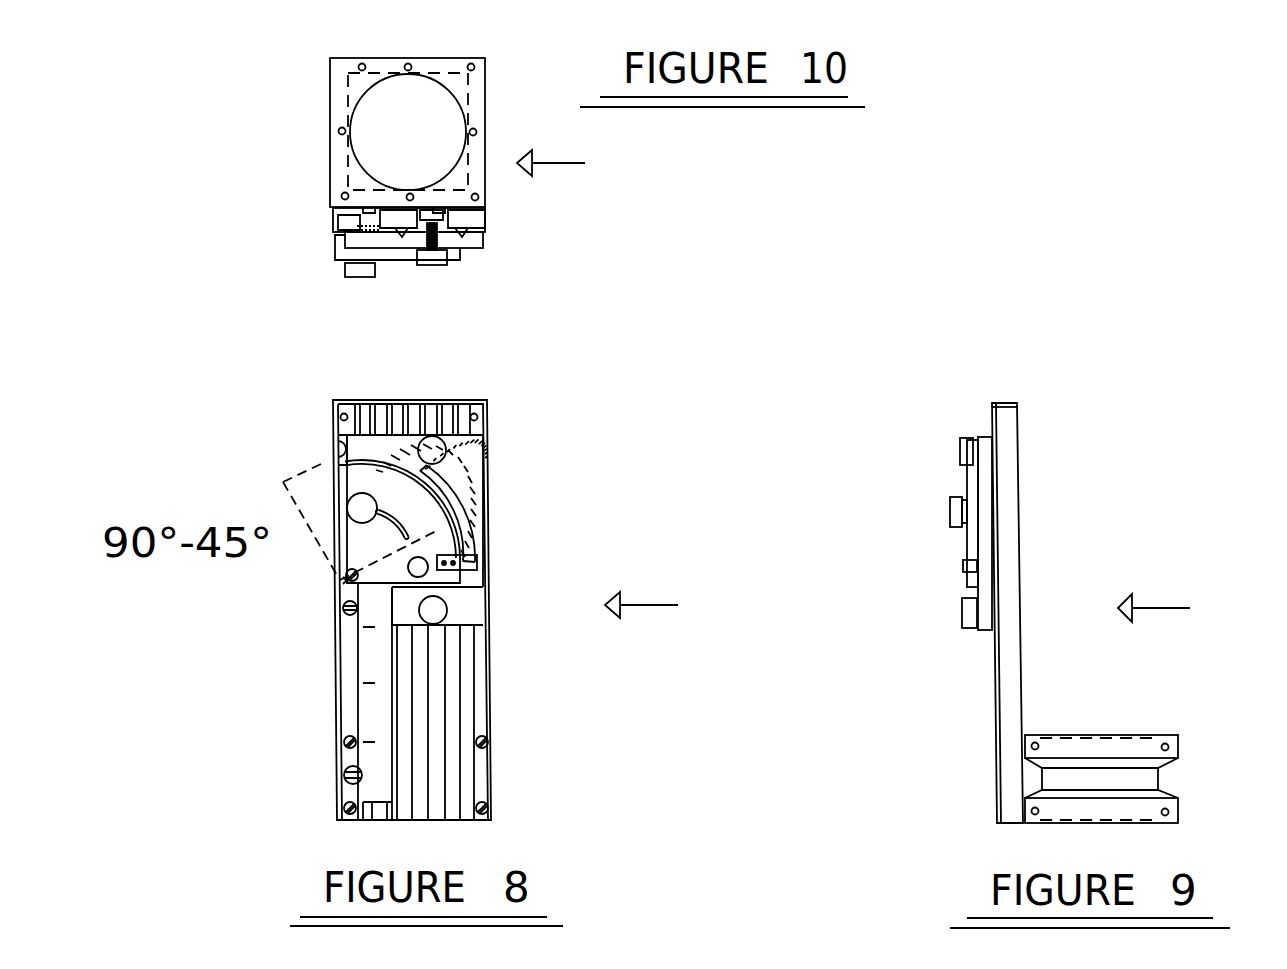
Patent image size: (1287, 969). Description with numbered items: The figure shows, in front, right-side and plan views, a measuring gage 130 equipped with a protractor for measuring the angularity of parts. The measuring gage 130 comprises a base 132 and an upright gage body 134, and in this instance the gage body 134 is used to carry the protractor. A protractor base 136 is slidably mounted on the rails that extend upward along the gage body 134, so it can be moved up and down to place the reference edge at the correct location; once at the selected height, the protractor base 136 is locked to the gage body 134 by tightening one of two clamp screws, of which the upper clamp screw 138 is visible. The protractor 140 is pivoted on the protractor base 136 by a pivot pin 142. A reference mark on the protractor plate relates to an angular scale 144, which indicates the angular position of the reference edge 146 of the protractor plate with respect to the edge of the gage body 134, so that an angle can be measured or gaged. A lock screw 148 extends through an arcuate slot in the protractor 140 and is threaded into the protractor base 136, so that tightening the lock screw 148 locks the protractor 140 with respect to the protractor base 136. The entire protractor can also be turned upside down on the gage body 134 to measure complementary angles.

In FIG. 10, the measuring gage 130 is at (580, 163).
In FIG. 8, the measuring gage 130 is at (668, 605).
In FIG. 9, the measuring gage 130 is at (1180, 608).
In FIG. 10, the base 132 is at (328, 102).
In FIG. 9, the base 132 is at (1140, 737).
In FIG. 10, the gage body 134 is at (487, 218).
In FIG. 8, the gage body 134 is at (493, 697).
In FIG. 9, the gage body 134 is at (1022, 647).
In FIG. 10, the protractor base 136 is at (484, 243).
In FIG. 8, the protractor base 136 is at (475, 600).
In FIG. 9, the protractor base 136 is at (975, 488).
In FIG. 10, the upper clamp screw 138 is at (435, 266).
In FIG. 8, the upper clamp screw 138 is at (447, 433).
In FIG. 9, the upper clamp screw 138 is at (958, 450).
In FIG. 8, the protractor 140 is at (337, 567).
In FIG. 9, the protractor 140 is at (965, 538).
In FIG. 8, the pivot pin 142 is at (345, 580).
In FIG. 8, the angular scale 144 is at (432, 533).
In FIG. 8, the reference edge 146 is at (333, 520).
In FIG. 8, the lock screw 148 is at (350, 498).